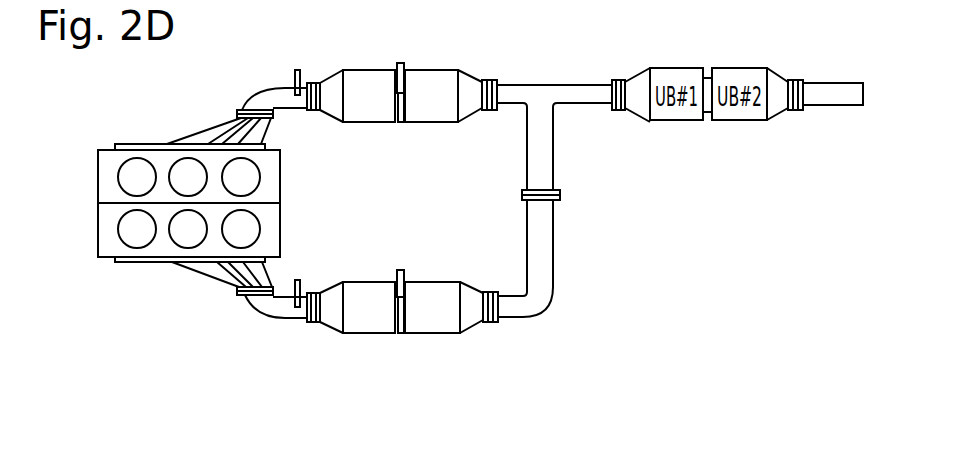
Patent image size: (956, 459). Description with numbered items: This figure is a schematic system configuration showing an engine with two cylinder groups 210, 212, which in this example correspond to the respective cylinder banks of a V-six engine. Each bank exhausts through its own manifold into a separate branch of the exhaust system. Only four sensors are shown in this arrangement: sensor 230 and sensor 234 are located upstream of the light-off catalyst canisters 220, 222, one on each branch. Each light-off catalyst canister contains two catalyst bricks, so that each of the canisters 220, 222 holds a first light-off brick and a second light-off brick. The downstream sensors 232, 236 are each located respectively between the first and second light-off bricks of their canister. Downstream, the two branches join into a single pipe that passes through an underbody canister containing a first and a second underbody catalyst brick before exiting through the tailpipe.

The cylinder group 210 is at (98, 178).
The cylinder group 212 is at (98, 228).
The light-off catalyst canister 220 is at (386, 122).
The light-off catalyst canister 222 is at (388, 333).
The sensor 230 is at (297, 70).
The downstream sensor 232 is at (400, 63).
The sensor 234 is at (297, 280).
The downstream sensor 236 is at (400, 270).